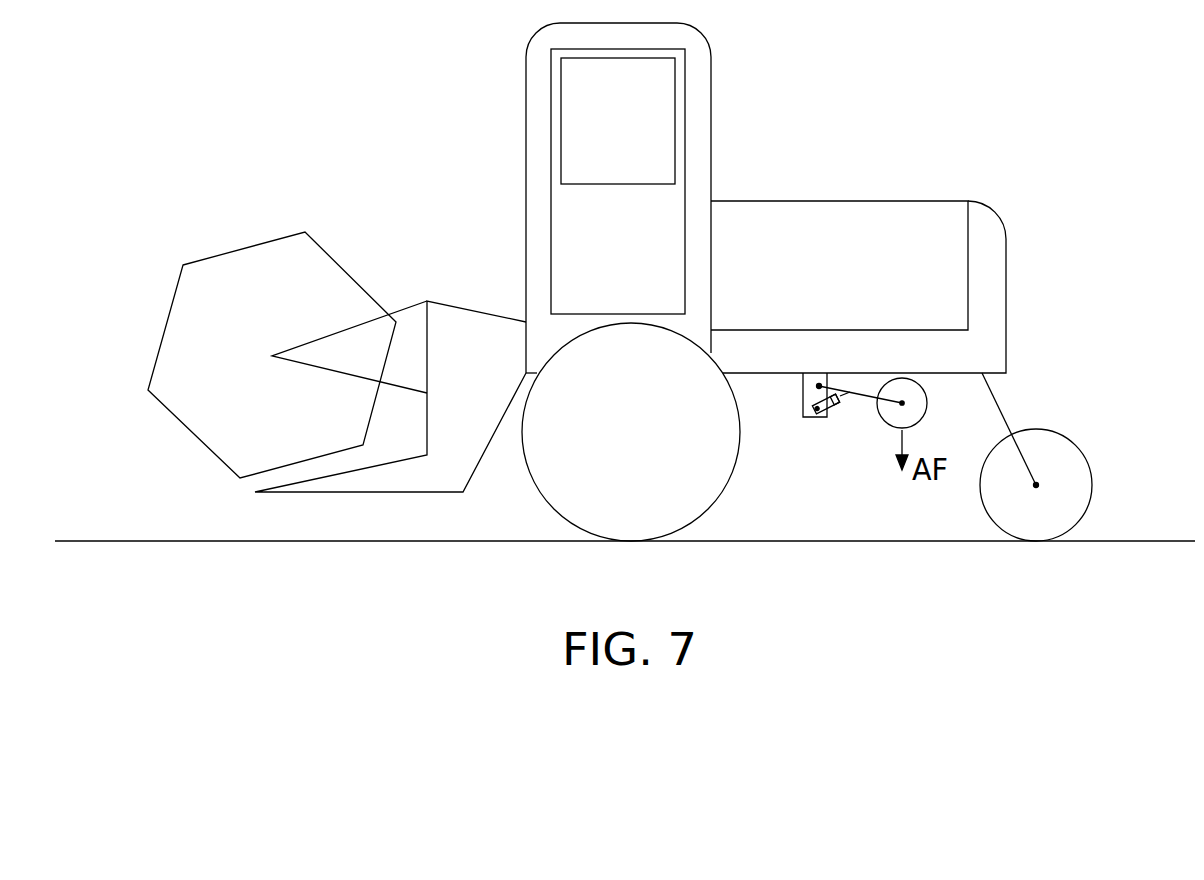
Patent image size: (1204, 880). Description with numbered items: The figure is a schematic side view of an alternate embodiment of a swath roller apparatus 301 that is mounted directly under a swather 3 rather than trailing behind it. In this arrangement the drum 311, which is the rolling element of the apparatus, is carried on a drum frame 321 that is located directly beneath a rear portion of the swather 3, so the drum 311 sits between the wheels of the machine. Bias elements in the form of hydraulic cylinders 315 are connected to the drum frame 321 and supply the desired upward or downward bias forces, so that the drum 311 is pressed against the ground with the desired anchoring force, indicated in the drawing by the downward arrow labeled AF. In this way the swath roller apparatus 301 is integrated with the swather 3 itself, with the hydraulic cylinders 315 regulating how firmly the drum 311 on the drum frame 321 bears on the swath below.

The swather 3 is at (768, 201).
The swath roller apparatus 301 is at (788, 441).
The drum 311 is at (928, 403).
The hydraulic cylinders 315 is at (839, 416).
The drum frame 321 is at (866, 395).